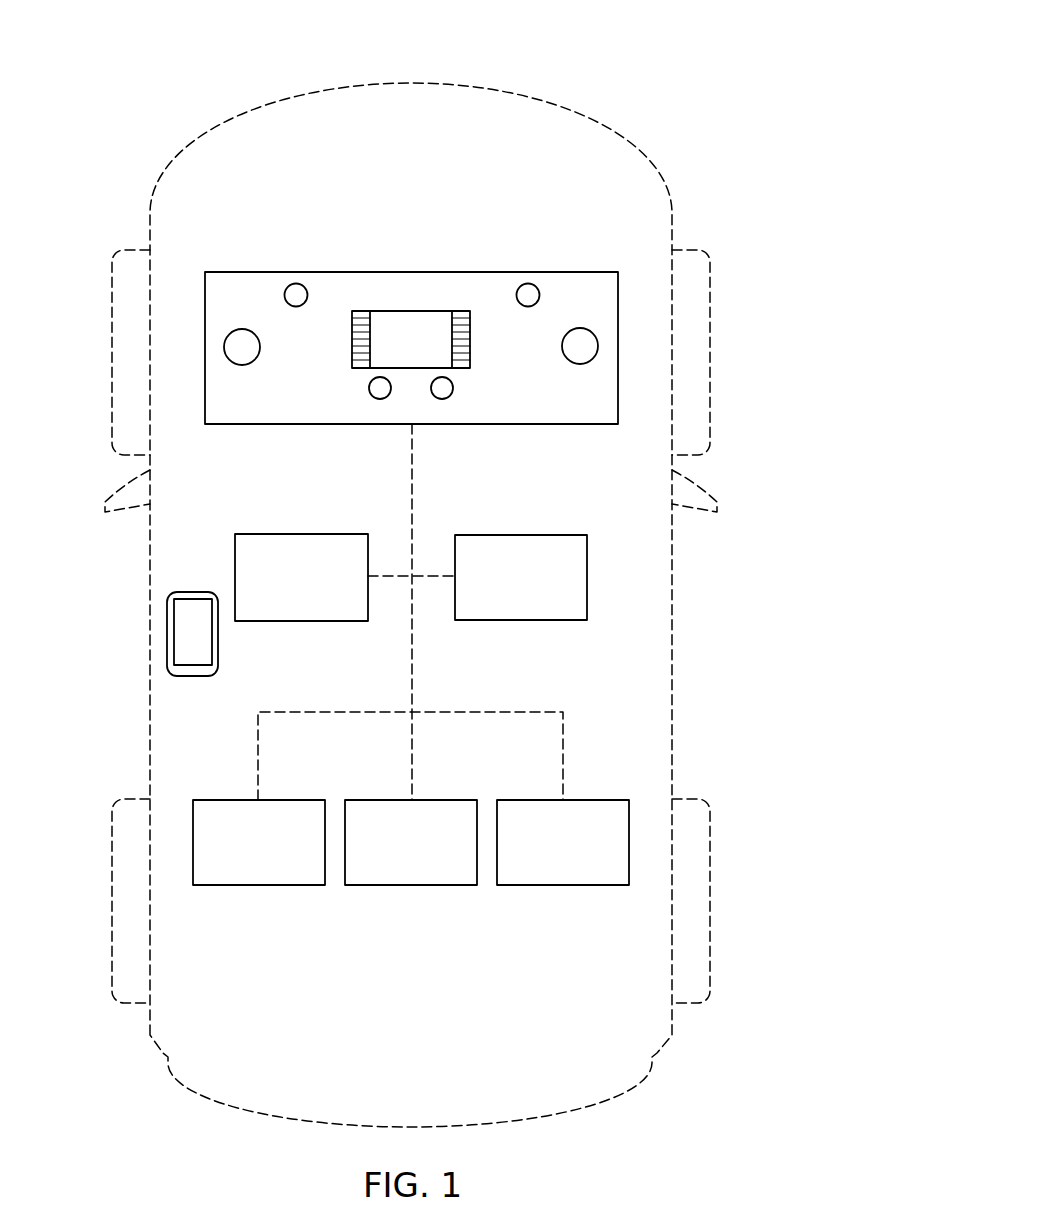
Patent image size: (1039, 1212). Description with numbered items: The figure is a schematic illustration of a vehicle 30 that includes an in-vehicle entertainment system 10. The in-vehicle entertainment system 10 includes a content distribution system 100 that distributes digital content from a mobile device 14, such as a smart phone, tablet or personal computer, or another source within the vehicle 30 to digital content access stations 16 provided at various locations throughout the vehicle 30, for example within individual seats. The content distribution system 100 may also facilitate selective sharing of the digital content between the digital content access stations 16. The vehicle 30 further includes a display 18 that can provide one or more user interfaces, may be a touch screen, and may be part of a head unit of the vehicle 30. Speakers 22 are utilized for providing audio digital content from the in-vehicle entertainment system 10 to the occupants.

The in-vehicle entertainment system 10 is at (428, 605).
The vehicle 30 is at (491, 405).
The display 18 is at (296, 283).
The speaker 22 is at (260, 347).
The content distribution system 100 is at (172, 554).
The digital content access station 16 is at (593, 587).
The mobile device 14 is at (160, 667).